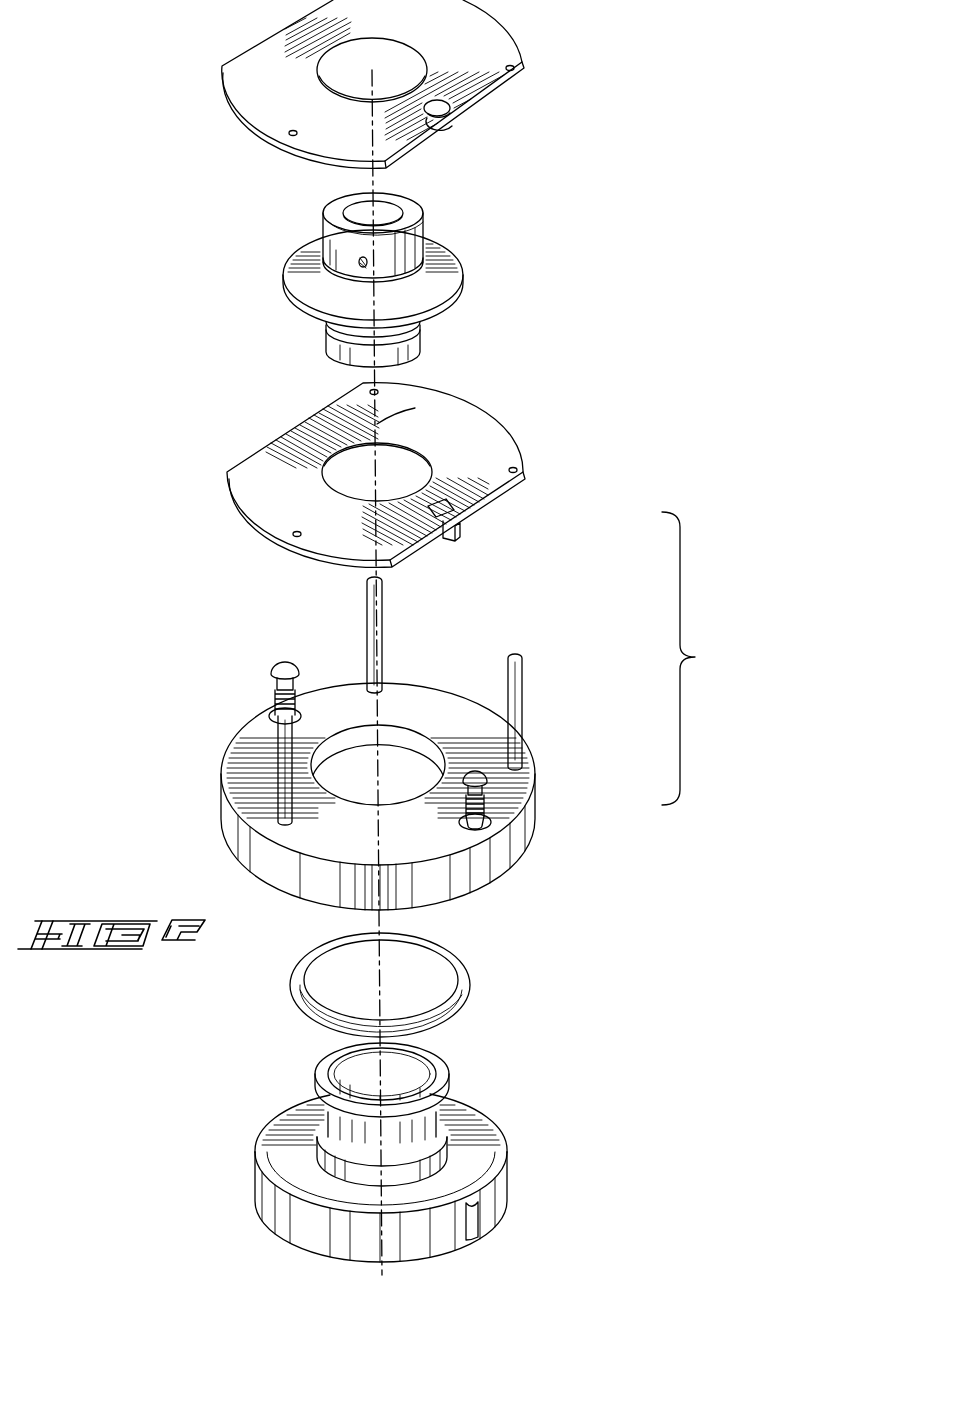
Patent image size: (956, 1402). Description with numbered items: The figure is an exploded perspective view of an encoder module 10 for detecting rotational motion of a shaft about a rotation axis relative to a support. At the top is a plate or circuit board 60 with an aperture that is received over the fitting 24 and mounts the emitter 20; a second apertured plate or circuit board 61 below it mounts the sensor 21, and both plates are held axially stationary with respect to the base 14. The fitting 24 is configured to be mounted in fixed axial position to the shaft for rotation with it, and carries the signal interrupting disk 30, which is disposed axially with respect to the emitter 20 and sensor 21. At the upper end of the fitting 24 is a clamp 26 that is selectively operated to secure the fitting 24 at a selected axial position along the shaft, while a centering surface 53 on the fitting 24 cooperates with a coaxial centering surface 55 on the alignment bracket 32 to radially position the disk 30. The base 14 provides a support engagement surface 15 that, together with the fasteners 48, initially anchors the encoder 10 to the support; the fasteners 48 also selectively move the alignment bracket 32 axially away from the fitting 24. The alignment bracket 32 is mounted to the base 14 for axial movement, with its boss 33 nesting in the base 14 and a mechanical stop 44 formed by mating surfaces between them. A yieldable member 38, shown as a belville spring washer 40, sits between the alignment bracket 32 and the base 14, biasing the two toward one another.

The encoder module 10 is at (540, 181).
The plate or circuit board 60 is at (489, 51).
The emitter 20 is at (452, 117).
The fitting 24 is at (425, 216).
The signal interrupting disk 30 is at (462, 259).
The clamp 26 is at (352, 262).
The centering surface 53 is at (422, 358).
The plate or circuit board 61 is at (495, 450).
The sensor 21 is at (467, 520).
The fastener 48 is at (280, 671).
The base 14 is at (533, 749).
The mechanical stop 44 is at (357, 748).
The support engagement surface 15 is at (510, 870).
The yieldable member 38 is at (470, 970).
The belville spring washer 40 is at (453, 1007).
The centering surface 55 is at (328, 1065).
The alignment bracket 32 is at (473, 1093).
The boss 33 is at (447, 1155).